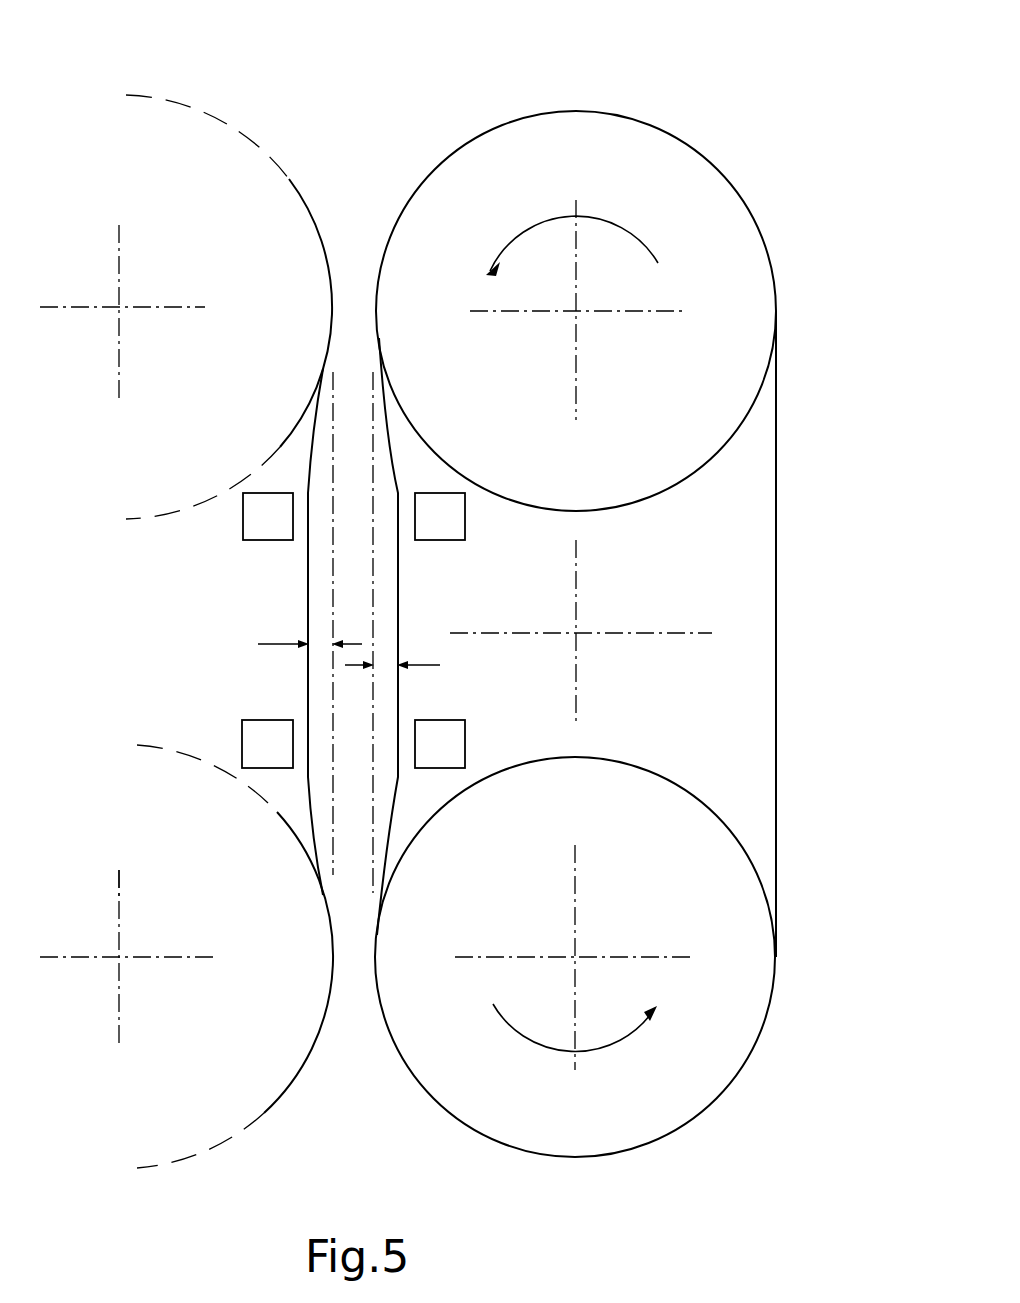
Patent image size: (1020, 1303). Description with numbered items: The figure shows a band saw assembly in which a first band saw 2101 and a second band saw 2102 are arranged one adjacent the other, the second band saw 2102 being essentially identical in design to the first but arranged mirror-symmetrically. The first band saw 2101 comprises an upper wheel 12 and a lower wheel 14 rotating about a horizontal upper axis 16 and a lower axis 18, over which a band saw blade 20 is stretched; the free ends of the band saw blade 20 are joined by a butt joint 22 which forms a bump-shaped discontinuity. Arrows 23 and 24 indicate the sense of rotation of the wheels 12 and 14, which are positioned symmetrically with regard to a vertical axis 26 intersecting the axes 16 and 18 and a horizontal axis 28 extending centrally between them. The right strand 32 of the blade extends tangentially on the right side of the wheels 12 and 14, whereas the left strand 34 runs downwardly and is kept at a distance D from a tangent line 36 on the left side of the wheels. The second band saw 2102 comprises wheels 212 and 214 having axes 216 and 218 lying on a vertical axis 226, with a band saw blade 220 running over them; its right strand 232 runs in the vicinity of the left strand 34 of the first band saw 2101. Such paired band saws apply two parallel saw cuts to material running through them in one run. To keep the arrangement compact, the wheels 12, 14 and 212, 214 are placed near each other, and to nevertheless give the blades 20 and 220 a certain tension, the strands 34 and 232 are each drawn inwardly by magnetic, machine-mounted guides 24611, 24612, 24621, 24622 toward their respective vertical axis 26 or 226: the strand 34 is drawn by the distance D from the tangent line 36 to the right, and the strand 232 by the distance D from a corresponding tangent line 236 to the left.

The first band saw 2101 is at (800, 145).
The second band saw 2102 is at (241, 86).
The upper wheel 12 is at (743, 251).
The lower wheel 14 is at (725, 1050).
The upper axis 16 is at (578, 313).
The lower axis 18 is at (578, 957).
The band saw blade 20 is at (782, 770).
The butt joint 22 is at (778, 485).
The arrow 23 is at (619, 227).
The arrow 24 is at (530, 1047).
The vertical axis 26 is at (580, 547).
The horizontal axis 28 is at (685, 633).
The right strand 32 is at (777, 598).
The left strand 34 is at (401, 593).
The tangent line 36 is at (370, 790).
The wheel 212 is at (285, 223).
The wheel 214 is at (273, 1073).
The axis 216 is at (125, 303).
The axis 218 is at (130, 956).
The band saw blade 220 is at (304, 579).
The vertical axis 226 is at (122, 878).
The right strand 232 is at (307, 684).
The tangent line 236 is at (333, 436).
The magnetic guide 24611 is at (250, 523).
The magnetic guide 24612 is at (243, 737).
The magnetic guide 24621 is at (453, 518).
The magnetic guide 24622 is at (460, 748).
The distance D is at (327, 630).